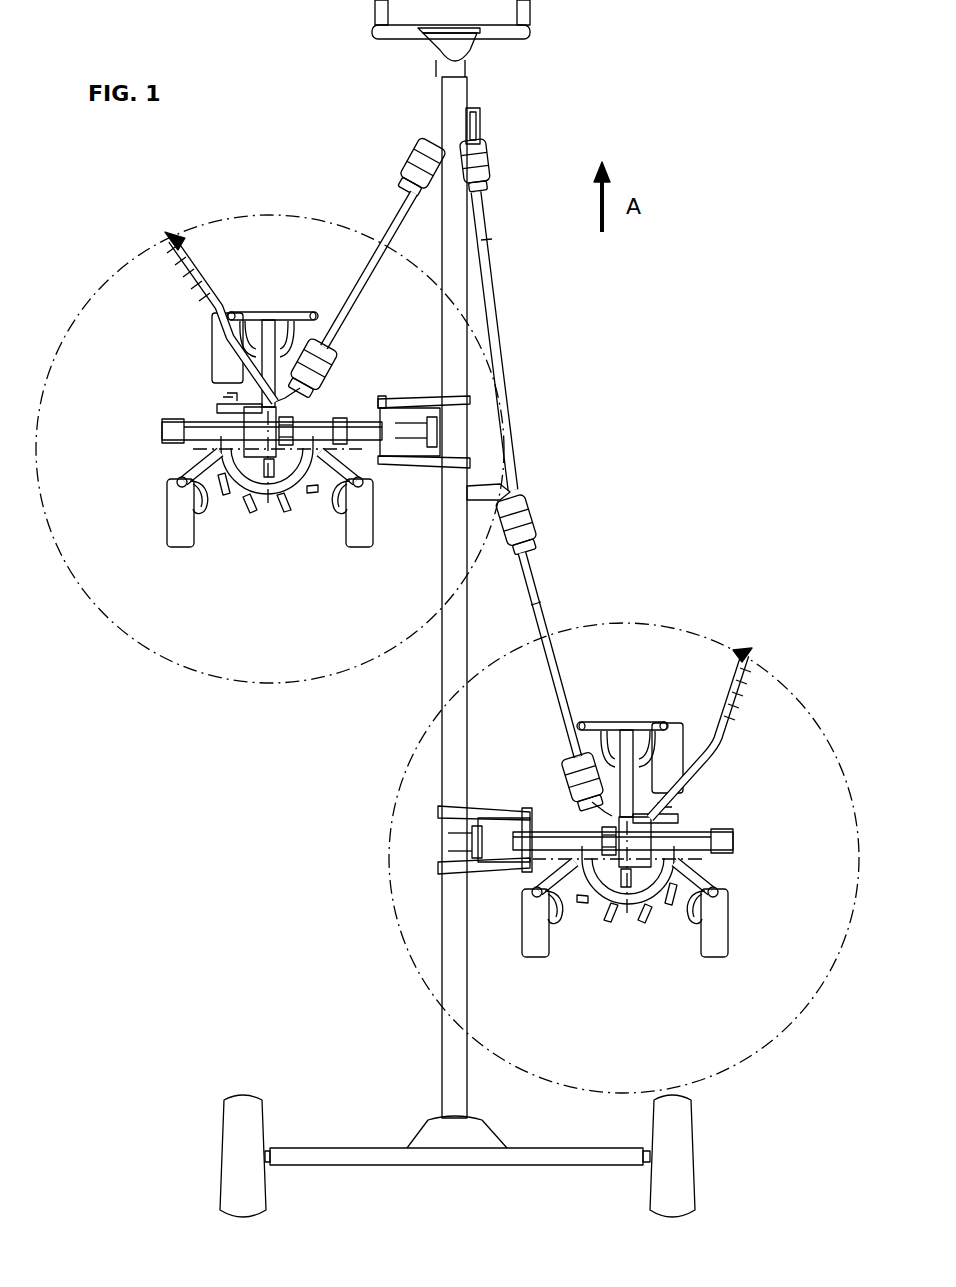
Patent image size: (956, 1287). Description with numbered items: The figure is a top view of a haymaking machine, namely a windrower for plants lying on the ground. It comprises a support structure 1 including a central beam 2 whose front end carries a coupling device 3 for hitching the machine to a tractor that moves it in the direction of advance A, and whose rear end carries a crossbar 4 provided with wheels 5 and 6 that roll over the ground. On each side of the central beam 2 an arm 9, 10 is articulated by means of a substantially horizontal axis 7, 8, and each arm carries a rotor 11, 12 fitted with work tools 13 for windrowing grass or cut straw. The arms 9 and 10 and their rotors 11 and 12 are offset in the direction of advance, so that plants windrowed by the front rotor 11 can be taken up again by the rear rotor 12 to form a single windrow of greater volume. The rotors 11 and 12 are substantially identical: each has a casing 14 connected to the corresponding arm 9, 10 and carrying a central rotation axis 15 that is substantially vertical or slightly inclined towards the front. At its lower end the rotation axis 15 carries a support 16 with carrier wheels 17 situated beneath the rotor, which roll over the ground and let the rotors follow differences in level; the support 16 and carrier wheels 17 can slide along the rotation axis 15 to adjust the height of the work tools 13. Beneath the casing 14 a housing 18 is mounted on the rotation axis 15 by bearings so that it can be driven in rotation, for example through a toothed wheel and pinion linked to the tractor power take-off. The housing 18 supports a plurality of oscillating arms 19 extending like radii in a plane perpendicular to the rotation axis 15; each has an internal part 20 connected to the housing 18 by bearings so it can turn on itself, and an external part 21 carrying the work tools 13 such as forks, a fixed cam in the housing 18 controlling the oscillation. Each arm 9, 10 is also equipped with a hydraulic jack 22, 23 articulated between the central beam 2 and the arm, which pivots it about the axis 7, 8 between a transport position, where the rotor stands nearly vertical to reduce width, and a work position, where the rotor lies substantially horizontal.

The support structure 1 is at (443, 660).
The central beam 2 is at (455, 237).
The coupling device 3 is at (385, 43).
The crossbar 4 is at (363, 1156).
The wheel 5 is at (228, 1120).
The wheel 6 is at (686, 1160).
The horizontal axis 7 is at (387, 398).
The horizontal axis 8 is at (512, 868).
The arm 9 is at (165, 427).
The arm 10 is at (740, 848).
The rotor 11 is at (122, 250).
The rotor 12 is at (684, 620).
The work tools 13 is at (192, 280).
The casing 14 is at (270, 485).
The central rotation axis 15 is at (257, 492).
The support 16 is at (195, 470).
The carrier wheels 17 is at (176, 522).
The housing 18 is at (293, 502).
The oscillating arms 19 is at (183, 240).
The internal part 20 is at (240, 400).
The external part 21 is at (208, 287).
The hydraulic jack 22 is at (362, 442).
The hydraulic jack 23 is at (494, 840).